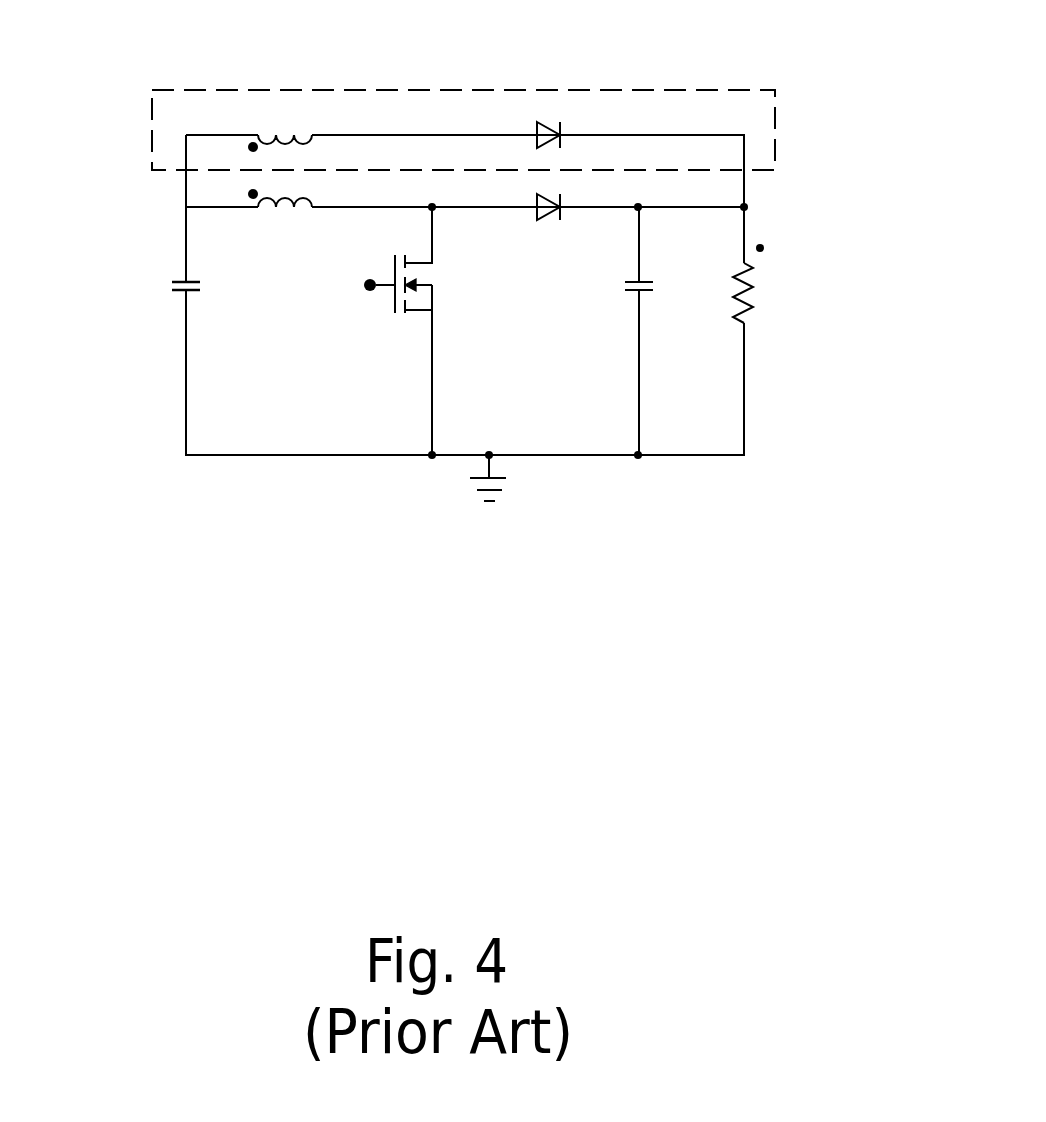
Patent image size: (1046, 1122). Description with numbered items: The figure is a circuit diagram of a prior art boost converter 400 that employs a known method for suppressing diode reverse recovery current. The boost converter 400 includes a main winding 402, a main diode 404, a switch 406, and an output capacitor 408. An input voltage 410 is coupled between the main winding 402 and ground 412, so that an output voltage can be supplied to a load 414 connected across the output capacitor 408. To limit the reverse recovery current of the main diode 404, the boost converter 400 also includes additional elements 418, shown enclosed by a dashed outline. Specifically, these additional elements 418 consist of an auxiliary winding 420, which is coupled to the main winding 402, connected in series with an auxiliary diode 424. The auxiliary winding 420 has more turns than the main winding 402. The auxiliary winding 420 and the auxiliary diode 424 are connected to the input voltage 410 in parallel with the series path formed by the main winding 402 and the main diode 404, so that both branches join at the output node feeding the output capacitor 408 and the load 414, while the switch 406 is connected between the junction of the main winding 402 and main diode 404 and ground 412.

The boost converter 400 is at (300, 557).
The main winding 402 is at (284, 208).
The main diode 404 is at (552, 222).
The switch 406 is at (418, 312).
The output capacitor 408 is at (635, 292).
The input voltage 410 is at (177, 292).
The ground 412 is at (485, 504).
The load 414 is at (753, 285).
The additional elements 418 is at (698, 90).
The auxiliary winding 420 is at (286, 133).
The auxiliary diode 424 is at (555, 120).